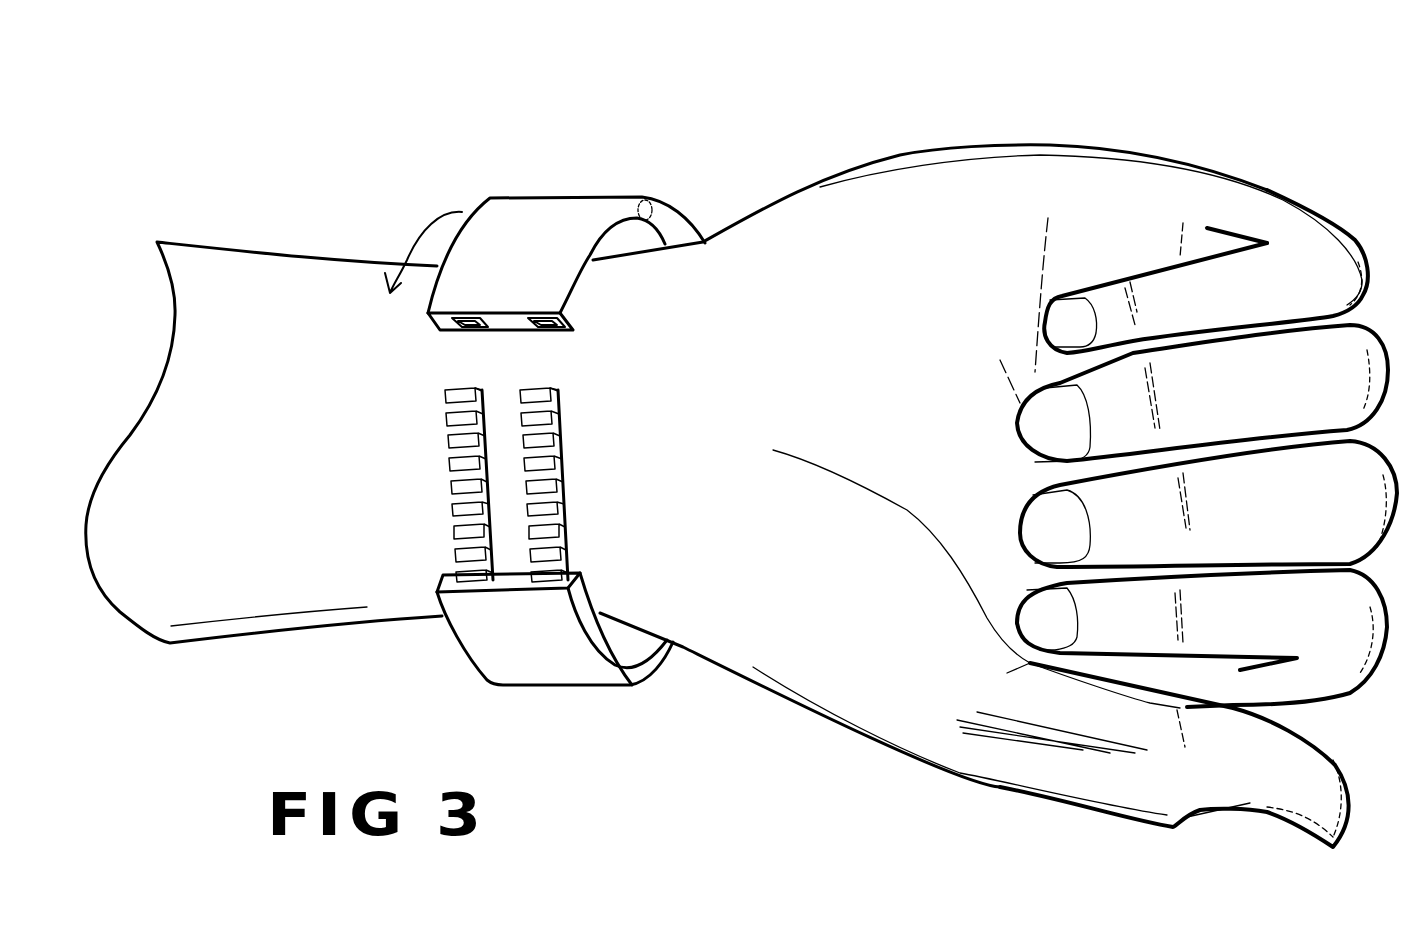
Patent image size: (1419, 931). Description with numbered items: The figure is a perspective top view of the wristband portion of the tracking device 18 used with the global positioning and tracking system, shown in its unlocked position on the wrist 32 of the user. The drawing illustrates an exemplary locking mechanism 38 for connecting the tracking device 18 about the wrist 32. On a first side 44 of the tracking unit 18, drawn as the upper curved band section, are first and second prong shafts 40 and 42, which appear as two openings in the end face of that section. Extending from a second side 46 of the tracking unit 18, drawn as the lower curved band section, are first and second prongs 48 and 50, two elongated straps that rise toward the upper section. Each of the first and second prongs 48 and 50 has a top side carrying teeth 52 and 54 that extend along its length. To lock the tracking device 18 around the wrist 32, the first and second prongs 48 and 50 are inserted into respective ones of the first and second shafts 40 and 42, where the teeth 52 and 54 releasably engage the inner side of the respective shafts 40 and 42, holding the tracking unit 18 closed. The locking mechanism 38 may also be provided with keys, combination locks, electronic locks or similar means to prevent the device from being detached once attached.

The tracking device 18 is at (543, 160).
The wrist 32 is at (420, 558).
The locking mechanism 38 is at (519, 482).
The first prong shaft 40 is at (477, 330).
The second prong shaft 42 is at (557, 330).
The first side 44 is at (547, 282).
The second side 46 is at (567, 623).
The first prong 48 is at (437, 485).
The second prong 50 is at (577, 485).
The teeth 52 is at (443, 464).
The teeth 54 is at (557, 498).